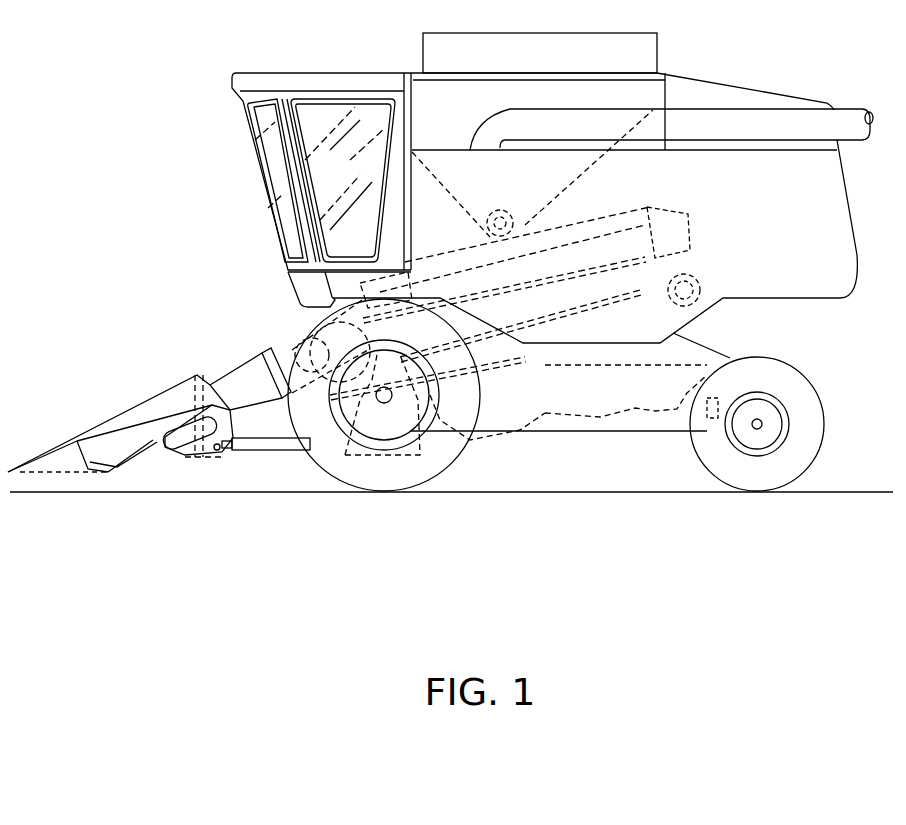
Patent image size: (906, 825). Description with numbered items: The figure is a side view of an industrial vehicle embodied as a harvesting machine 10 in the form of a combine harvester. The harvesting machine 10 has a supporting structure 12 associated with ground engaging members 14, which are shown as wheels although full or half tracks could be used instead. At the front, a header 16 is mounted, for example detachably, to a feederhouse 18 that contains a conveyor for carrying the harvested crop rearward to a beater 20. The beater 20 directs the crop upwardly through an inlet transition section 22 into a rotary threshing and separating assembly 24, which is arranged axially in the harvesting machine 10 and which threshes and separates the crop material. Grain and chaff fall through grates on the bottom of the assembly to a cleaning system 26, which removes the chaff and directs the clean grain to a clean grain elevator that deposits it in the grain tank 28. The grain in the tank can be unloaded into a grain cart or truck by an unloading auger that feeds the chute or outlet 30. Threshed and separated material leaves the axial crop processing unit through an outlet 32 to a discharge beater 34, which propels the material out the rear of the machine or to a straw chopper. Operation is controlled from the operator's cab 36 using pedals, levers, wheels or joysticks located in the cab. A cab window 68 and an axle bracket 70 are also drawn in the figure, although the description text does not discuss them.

The harvesting machine 10 is at (724, 62).
The supporting structure 12 is at (603, 433).
The ground engaging members 14 is at (440, 453).
The header 16 is at (143, 412).
The feederhouse 18 is at (238, 375).
The beater 20 is at (290, 325).
The inlet transition section 22 is at (414, 425).
The rotary threshing and separating assembly 24 is at (455, 243).
The cleaning system 26 is at (528, 358).
The grain tank 28 is at (457, 113).
The chute or outlet 30 is at (777, 135).
The outlet 32 is at (694, 250).
The discharge beater 34 is at (692, 278).
The operator's cab 36 is at (337, 215).
The cab window 68 is at (337, 90).
The axle bracket 70 is at (713, 395).